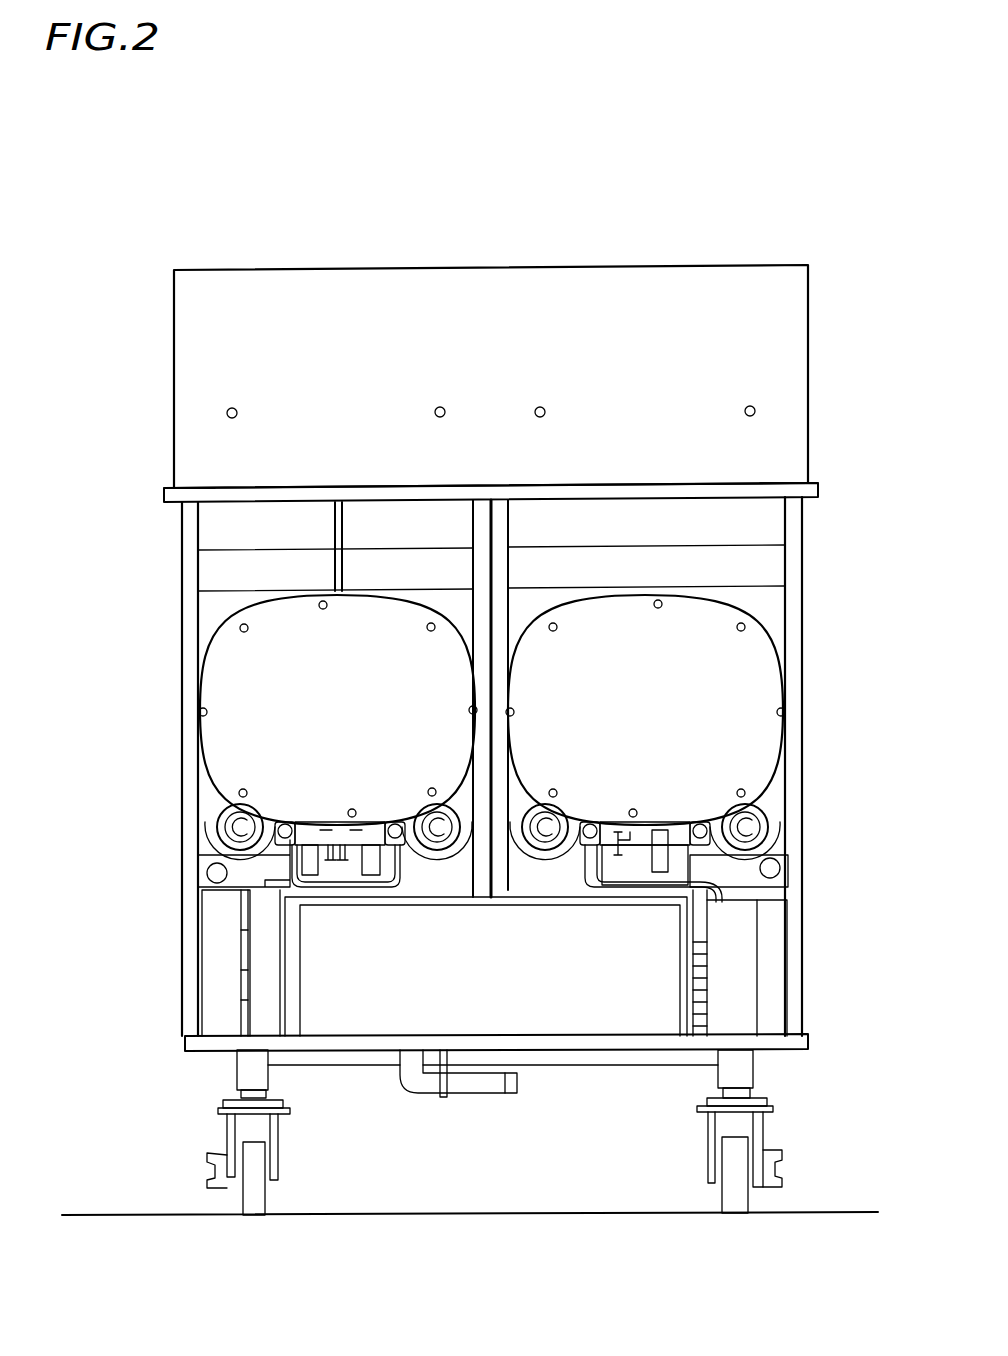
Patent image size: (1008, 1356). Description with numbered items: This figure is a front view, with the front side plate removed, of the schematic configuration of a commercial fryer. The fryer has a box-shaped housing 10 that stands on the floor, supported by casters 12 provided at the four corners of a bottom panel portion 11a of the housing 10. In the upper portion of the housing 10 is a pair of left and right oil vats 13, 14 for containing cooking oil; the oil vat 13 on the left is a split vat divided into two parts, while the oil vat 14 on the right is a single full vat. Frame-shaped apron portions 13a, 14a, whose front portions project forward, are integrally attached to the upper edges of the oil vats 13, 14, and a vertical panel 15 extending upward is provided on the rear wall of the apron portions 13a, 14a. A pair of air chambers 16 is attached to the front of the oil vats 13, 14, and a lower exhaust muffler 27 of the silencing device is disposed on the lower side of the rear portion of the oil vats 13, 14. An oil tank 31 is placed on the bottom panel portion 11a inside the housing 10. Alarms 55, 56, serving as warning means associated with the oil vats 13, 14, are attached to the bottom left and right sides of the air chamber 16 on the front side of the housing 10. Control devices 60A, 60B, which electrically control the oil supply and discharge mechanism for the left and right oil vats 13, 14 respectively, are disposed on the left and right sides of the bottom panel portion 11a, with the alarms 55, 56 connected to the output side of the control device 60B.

The housing 10 is at (808, 605).
The bottom panel portion 11a is at (665, 1050).
The caster 12 is at (275, 1170).
The oil vat 13 is at (213, 498).
The apron portion 13a is at (218, 531).
The oil vat 14 is at (760, 490).
The apron portion 14a is at (762, 526).
The vertical panel 15 is at (490, 265).
The air chamber 16 is at (218, 684).
The lower exhaust muffler 27 is at (212, 820).
The oil tank 31 is at (562, 1010).
The alarm 55 is at (205, 876).
The alarm 56 is at (786, 868).
The control device 60A is at (222, 963).
The control device 60B is at (768, 976).